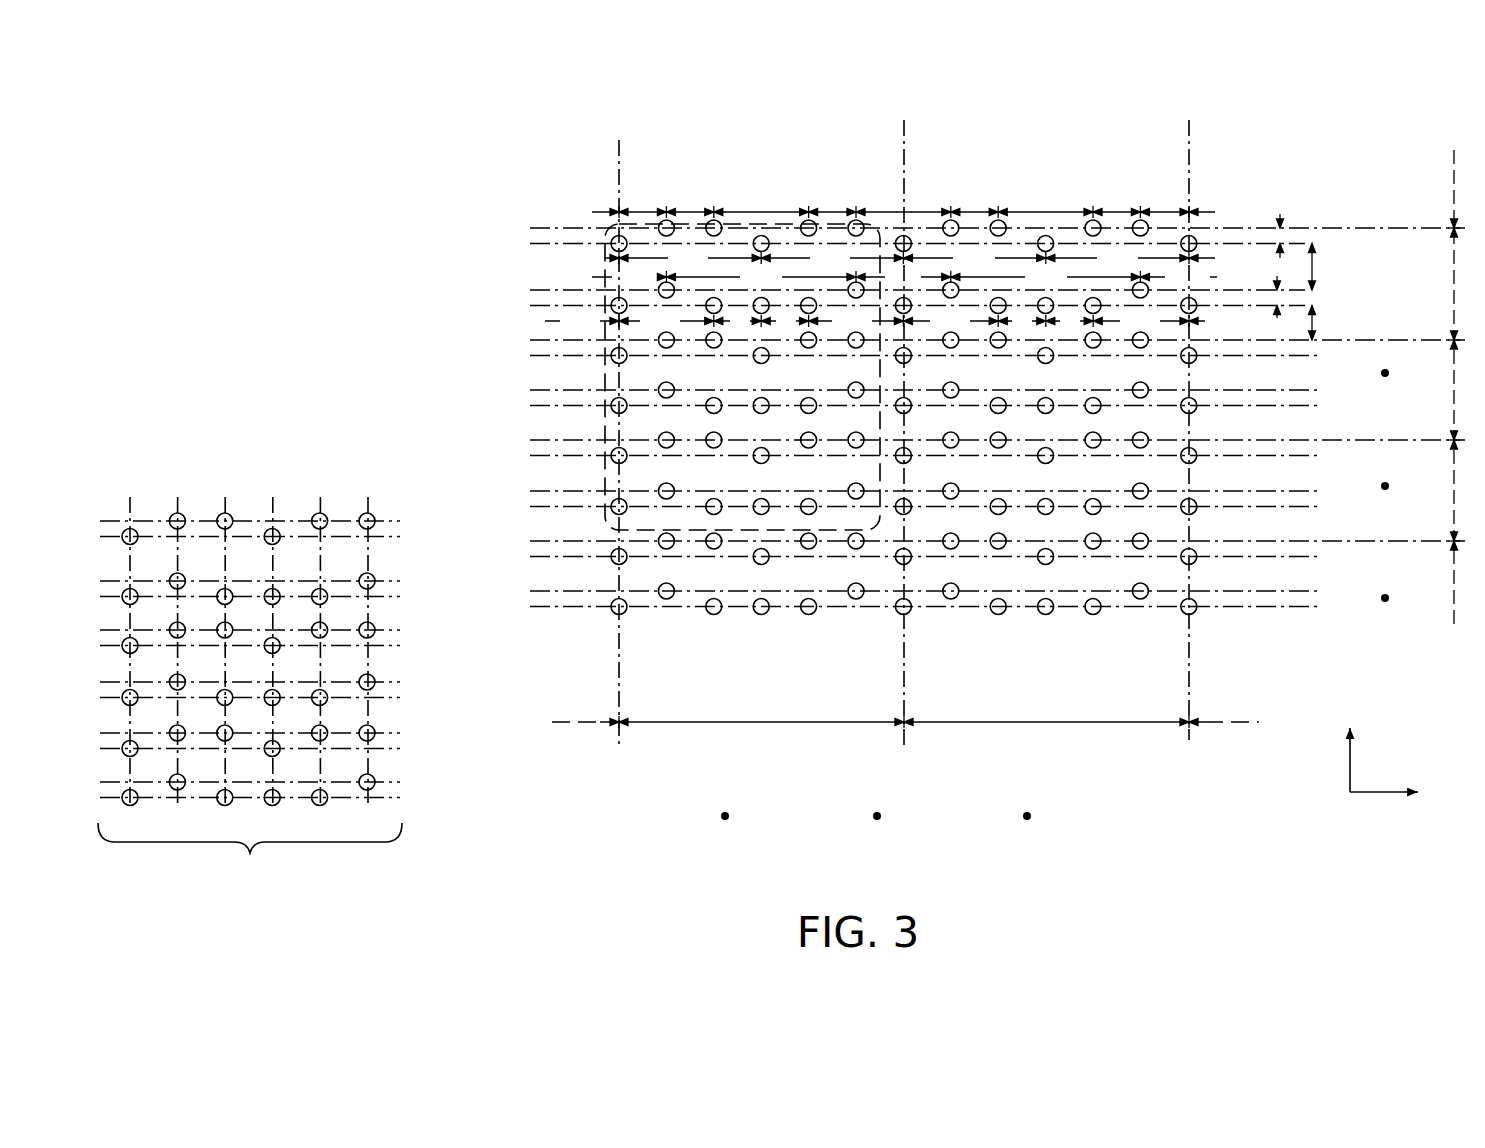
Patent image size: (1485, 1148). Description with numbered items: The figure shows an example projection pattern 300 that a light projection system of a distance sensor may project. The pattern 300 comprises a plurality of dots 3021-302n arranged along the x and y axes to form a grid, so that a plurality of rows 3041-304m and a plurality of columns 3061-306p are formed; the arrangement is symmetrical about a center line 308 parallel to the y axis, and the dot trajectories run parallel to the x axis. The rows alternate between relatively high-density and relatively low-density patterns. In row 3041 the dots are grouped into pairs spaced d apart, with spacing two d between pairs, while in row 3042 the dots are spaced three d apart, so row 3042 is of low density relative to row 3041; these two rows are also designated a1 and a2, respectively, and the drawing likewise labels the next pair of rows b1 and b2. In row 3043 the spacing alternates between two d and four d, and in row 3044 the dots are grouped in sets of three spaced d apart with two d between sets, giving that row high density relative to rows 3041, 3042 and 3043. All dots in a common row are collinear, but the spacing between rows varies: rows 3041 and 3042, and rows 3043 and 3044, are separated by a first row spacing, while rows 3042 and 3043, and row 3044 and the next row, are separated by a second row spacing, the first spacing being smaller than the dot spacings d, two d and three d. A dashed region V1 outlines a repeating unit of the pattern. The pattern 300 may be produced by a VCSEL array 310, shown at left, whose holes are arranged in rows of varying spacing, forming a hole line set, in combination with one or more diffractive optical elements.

The projection pattern 300 is at (197, 84).
The dot 3021 is at (666, 212).
The dot 302n is at (1192, 610).
The row 3041 is at (1208, 212).
The row 3042 is at (1312, 230).
The row 3043 is at (1312, 245).
The row 3044 is at (1312, 288).
The row 304m is at (1313, 607).
The column 3061 is at (620, 728).
The column 306p is at (1189, 725).
The center line 308 is at (904, 130).
The VCSEL array 310 is at (250, 709).
The high-density row designation a1 is at (538, 224).
The low-density row designation a2 is at (525, 245).
The row b1 is at (525, 290).
The row b2 is at (525, 307).
The unit cell V1 is at (598, 478).